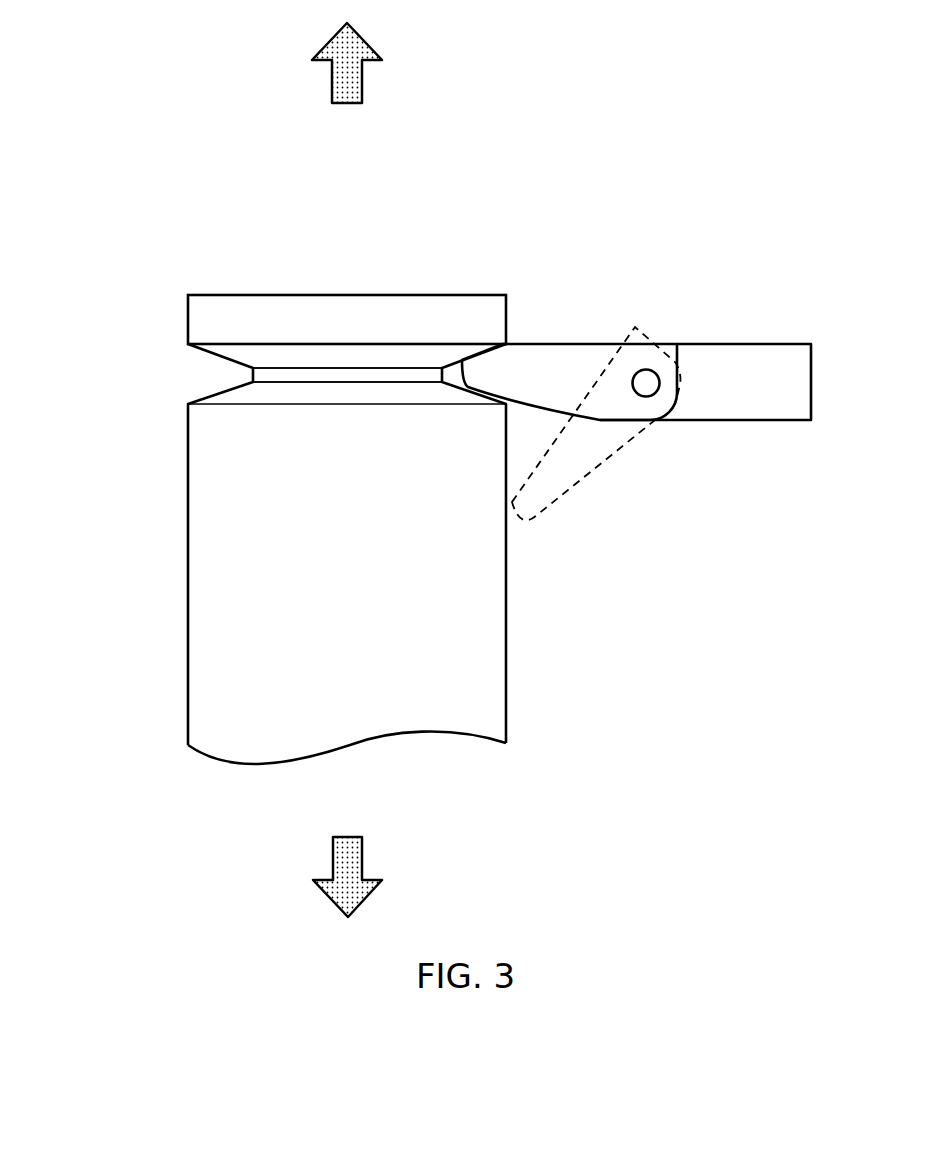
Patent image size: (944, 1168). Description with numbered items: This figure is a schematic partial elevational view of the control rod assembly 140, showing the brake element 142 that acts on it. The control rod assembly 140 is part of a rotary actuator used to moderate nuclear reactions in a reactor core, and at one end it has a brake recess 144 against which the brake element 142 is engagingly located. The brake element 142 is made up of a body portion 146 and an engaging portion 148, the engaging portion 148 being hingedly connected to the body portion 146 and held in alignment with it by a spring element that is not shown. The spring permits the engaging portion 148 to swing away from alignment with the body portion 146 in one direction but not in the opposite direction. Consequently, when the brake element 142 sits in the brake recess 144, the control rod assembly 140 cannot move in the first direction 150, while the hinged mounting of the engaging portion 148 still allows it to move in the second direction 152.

The control rod assembly 140 is at (310, 295).
The brake element 142 is at (743, 342).
The brake recess 144 is at (213, 373).
The body portion 146 is at (752, 422).
The engaging portion 148 is at (572, 342).
The first direction 150 is at (373, 61).
The second direction 152 is at (374, 877).